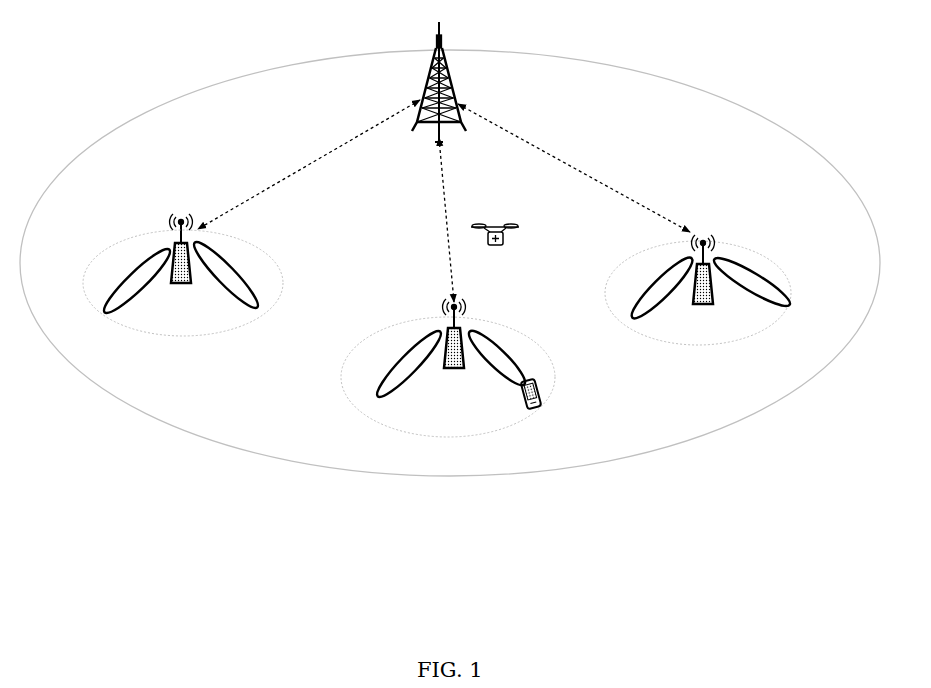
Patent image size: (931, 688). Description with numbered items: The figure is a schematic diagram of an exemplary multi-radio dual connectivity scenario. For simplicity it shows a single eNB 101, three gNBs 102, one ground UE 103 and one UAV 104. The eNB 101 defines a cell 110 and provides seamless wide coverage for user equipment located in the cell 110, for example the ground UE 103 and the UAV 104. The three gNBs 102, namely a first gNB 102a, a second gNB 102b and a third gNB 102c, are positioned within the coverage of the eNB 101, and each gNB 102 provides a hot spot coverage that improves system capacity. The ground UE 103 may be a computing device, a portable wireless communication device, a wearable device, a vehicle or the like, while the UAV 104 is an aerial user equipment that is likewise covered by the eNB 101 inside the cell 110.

The eNB 101 is at (431, 34).
The cell 110 is at (669, 74).
The gNB 102 is at (160, 214).
The first gNB 102a is at (183, 286).
The second gNB 102b is at (448, 382).
The third gNB 102c is at (697, 309).
The ground UE 103 is at (537, 414).
The UAV 104 is at (507, 242).